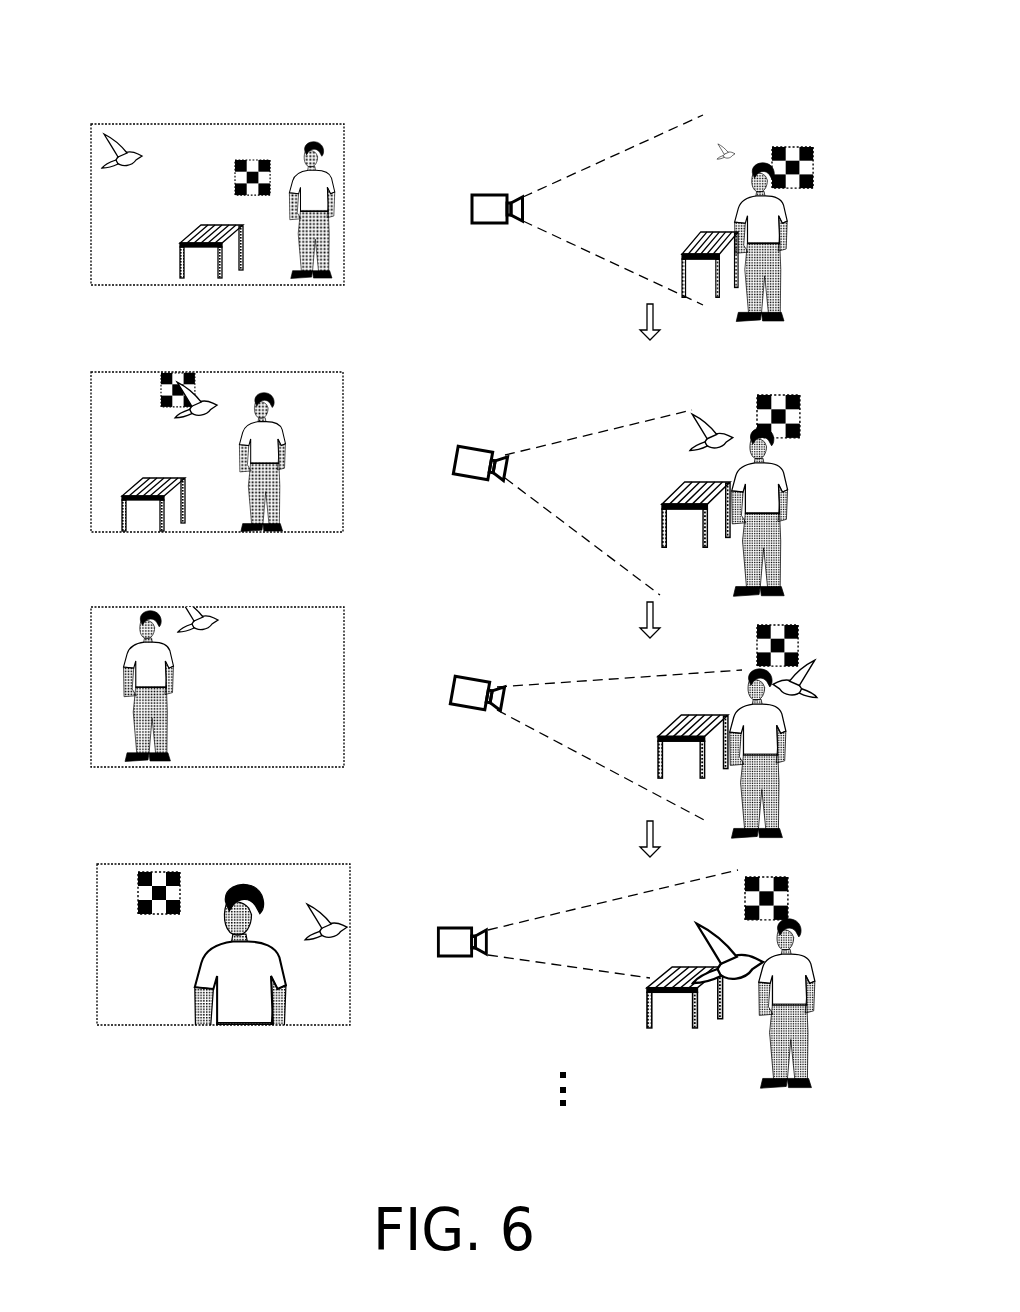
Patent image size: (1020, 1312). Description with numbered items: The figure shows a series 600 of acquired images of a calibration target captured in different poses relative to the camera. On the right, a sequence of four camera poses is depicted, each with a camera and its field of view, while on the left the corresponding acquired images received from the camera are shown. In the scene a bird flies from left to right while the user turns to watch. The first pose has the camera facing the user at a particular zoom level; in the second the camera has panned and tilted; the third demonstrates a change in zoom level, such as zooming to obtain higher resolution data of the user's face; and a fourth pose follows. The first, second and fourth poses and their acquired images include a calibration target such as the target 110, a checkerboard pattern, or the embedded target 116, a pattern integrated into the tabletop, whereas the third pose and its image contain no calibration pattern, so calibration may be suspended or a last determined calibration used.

The series of acquired images 600 is at (440, 586).
The target 110 is at (800, 147).
The embedded target 116 is at (733, 233).